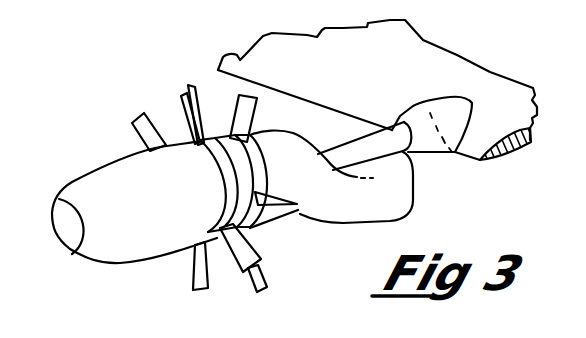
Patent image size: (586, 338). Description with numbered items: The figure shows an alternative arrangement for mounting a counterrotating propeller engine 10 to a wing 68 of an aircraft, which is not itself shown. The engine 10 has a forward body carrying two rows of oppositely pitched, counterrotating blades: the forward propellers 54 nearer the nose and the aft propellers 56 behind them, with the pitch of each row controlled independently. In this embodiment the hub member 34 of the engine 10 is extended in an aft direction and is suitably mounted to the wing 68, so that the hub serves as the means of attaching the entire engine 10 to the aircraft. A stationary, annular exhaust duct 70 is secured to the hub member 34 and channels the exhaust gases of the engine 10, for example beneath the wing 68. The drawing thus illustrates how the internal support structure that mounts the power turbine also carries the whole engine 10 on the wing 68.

The counterrotating propeller engine 10 is at (83, 177).
The forward propellers 54 is at (137, 118).
The aft propellers 56 is at (255, 115).
The exhaust duct 70 is at (297, 138).
The hub member 34 is at (380, 160).
The wing 68 is at (468, 156).